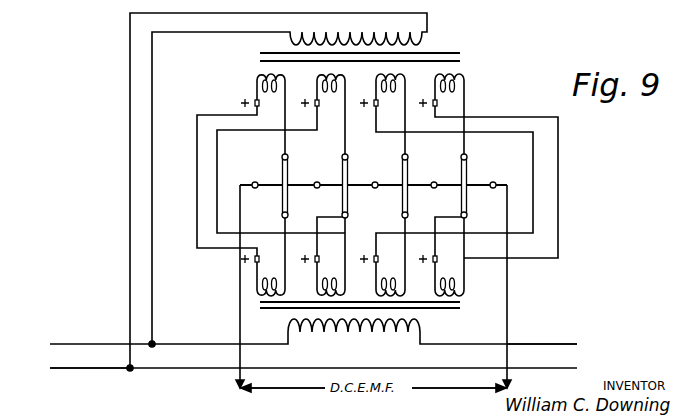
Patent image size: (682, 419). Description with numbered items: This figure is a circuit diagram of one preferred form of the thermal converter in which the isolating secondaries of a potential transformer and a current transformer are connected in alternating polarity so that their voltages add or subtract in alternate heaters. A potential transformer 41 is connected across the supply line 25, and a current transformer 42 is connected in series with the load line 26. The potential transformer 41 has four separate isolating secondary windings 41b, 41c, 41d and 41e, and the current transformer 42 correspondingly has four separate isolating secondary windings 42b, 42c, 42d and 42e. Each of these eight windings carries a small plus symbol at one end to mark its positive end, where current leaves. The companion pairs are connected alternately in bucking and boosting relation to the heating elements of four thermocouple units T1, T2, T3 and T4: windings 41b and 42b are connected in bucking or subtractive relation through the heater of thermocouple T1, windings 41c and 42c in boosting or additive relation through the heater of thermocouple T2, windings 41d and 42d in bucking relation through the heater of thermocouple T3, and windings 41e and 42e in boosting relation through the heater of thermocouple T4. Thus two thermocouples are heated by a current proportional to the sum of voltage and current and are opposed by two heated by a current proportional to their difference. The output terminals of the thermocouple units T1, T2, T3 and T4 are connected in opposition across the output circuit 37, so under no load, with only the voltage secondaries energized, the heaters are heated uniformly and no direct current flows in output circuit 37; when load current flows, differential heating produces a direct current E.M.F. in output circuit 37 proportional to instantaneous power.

The potential transformer 41 is at (466, 59).
The isolating secondary winding 41b is at (270, 97).
The isolating secondary winding 41c is at (330, 97).
The isolating secondary winding 41d is at (389, 97).
The isolating secondary winding 41e is at (450, 100).
The current transformer 42 is at (462, 307).
The isolating secondary winding 42b is at (270, 269).
The isolating secondary winding 42c is at (330, 269).
The isolating secondary winding 42d is at (389, 269).
The isolating secondary winding 42e is at (448, 269).
The thermocouple unit T1 is at (270, 186).
The thermocouple unit T2 is at (331, 186).
The thermocouple unit T3 is at (390, 186).
The thermocouple unit T4 is at (463, 186).
The supply line 25 is at (85, 359).
The load line 26 is at (542, 357).
The output circuit 37 is at (373, 402).